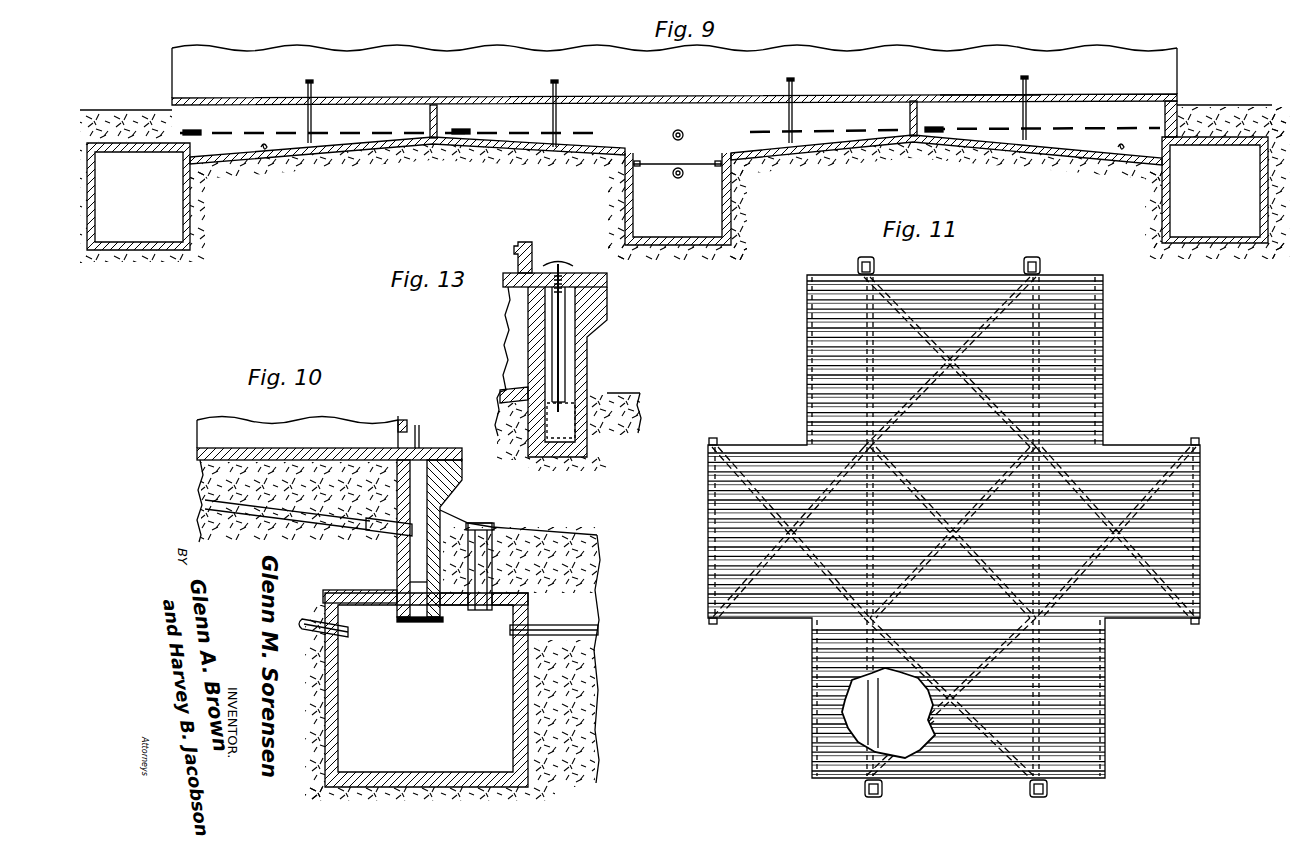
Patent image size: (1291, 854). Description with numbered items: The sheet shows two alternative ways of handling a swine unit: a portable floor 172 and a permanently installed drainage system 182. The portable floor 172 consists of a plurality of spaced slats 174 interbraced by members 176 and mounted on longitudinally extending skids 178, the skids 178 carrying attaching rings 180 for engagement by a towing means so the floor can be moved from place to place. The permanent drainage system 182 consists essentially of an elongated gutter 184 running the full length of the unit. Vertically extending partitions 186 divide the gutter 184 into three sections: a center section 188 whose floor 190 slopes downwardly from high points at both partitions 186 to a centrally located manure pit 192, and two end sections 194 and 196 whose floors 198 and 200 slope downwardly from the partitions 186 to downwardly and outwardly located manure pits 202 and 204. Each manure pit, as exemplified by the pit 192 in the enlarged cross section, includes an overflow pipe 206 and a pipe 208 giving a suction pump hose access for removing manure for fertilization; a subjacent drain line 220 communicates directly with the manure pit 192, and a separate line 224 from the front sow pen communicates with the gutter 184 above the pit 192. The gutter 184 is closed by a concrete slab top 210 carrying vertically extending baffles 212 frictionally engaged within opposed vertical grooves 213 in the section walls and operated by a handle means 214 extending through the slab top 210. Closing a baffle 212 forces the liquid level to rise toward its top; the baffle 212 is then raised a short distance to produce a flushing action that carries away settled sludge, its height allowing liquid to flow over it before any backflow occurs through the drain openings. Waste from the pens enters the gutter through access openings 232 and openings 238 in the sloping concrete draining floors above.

In FIG. 11, the portable floor 172 is at (1128, 437).
In FIG. 11, the spaced slats 174 is at (1183, 594).
In FIG. 11, the interbracing members 176 is at (1050, 650).
In FIG. 11, the longitudinally extending skids 178 is at (868, 710).
In FIG. 11, the attaching rings 180 is at (1048, 788).
In FIG. 9, the permanently installed drainage system 182 is at (1190, 80).
In FIG. 9, the elongated gutter 184 is at (808, 110).
In FIG. 9, the vertically extending partitions 186 is at (438, 108).
In FIG. 9, the center section 188 is at (634, 118).
In FIG. 9, the floor of center section 190 is at (589, 148).
In FIG. 9, the centrally located manure pit 192 is at (695, 198).
In FIG. 10, the centrally located manure pit 192 is at (495, 718).
In FIG. 9, the end section 194 is at (346, 118).
In FIG. 9, the end section 196 is at (1078, 108).
In FIG. 9, the floor of end section 198 is at (264, 150).
In FIG. 9, the floor of end section 200 is at (1120, 150).
In FIG. 9, the manure pit 202 is at (165, 215).
In FIG. 9, the manure pit 204 is at (1198, 226).
In FIG. 10, the overflow pipe 206 is at (598, 632).
In FIG. 10, the access pipe 208 is at (487, 530).
In FIG. 9, the concrete slab top 210 is at (982, 96).
In FIG. 9, the vertically extending baffle 212 is at (307, 127).
In FIG. 13, the vertically extending baffle 212 is at (562, 417).
In FIG. 13, the opposed vertical grooves 213 is at (550, 358).
In FIG. 9, the handle means 214 is at (789, 80).
In FIG. 13, the handle means 214 is at (558, 264).
In FIG. 10, the drain line 220 is at (348, 629).
In FIG. 10, the separate drain line 224 is at (300, 516).
In FIG. 9, the access openings 232 is at (461, 134).
In FIG. 9, the drain openings 238 is at (196, 133).